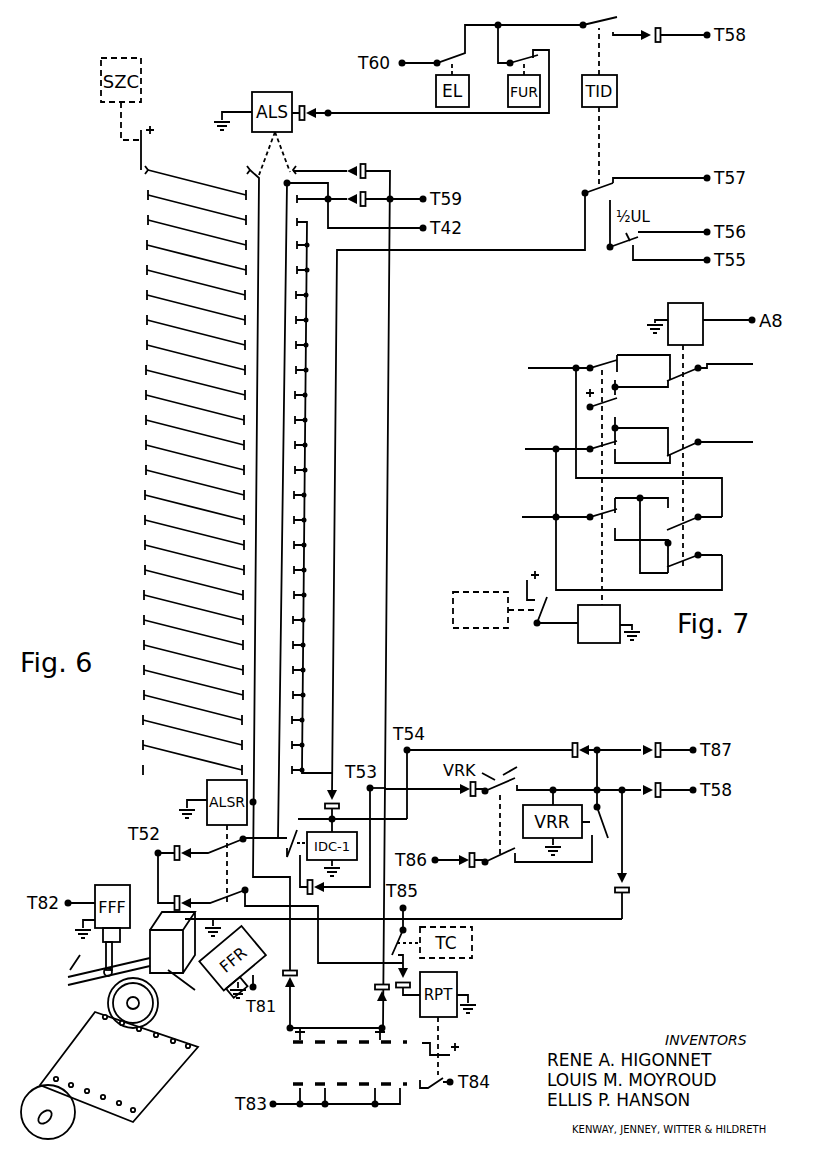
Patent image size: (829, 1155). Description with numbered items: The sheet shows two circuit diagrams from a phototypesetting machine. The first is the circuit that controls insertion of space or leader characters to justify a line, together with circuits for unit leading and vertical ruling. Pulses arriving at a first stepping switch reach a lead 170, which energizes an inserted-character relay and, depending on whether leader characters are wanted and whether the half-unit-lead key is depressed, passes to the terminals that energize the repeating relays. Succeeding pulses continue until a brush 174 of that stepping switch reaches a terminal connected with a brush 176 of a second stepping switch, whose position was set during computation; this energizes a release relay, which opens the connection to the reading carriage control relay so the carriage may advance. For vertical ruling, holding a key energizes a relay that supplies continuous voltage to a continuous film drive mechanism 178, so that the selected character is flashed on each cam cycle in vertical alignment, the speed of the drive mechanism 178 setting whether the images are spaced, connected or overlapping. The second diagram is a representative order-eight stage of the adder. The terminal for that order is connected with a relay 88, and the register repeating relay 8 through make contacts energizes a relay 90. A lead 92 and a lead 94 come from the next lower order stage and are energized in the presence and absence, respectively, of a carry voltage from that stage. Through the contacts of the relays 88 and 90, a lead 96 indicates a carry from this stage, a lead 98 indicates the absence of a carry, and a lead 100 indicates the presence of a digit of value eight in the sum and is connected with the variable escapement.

In FIG. 6, the brush of the switch SZC 176 is at (141, 163).
In FIG. 6, the brush of the switch ALS 174 is at (250, 165).
In FIG. 6, the lead 170 is at (313, 775).
In FIG. 6, the continuous film drive mechanism 178 is at (182, 940).
In FIG. 7, the relay 88 is at (677, 336).
In FIG. 7, the relay 90 is at (589, 637).
In FIG. 7, the register repeating relay 8 is at (474, 622).
In FIG. 7, the lead 92 is at (538, 449).
In FIG. 7, the lead 94 is at (550, 367).
In FIG. 7, the lead 96 is at (723, 423).
In FIG. 7, the lead 98 is at (723, 350).
In FIG. 7, the lead 100 is at (542, 506).